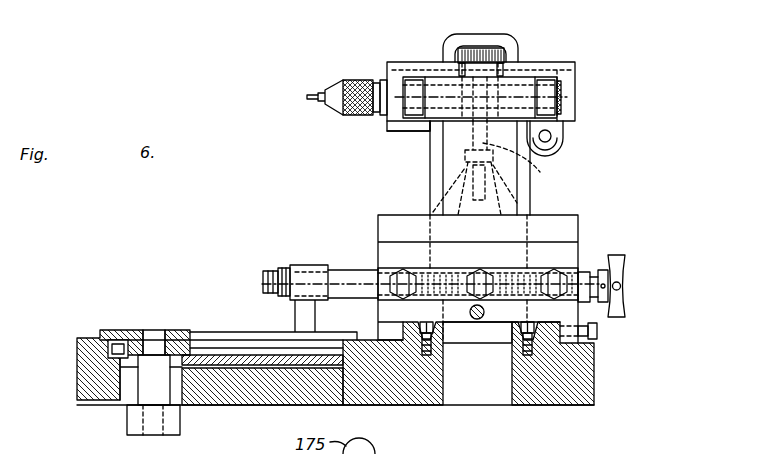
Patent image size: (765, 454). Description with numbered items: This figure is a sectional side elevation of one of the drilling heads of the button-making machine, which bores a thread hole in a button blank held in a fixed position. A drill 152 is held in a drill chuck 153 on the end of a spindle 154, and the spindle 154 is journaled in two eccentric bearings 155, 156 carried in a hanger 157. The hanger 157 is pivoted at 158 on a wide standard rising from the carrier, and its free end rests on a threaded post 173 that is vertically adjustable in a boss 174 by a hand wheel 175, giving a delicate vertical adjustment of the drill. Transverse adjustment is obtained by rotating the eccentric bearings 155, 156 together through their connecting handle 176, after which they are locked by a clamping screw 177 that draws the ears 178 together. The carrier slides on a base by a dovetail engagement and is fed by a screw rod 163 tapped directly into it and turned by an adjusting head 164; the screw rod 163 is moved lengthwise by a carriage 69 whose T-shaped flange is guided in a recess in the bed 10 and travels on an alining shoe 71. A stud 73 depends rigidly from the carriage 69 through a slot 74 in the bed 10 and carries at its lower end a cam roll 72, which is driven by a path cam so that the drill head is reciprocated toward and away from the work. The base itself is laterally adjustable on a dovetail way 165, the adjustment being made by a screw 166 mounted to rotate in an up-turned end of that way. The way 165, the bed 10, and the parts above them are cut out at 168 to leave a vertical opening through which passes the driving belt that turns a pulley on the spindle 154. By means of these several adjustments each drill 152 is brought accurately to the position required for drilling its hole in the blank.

The bed 10 is at (582, 376).
The carriage 69 is at (300, 318).
The alining shoe 71 is at (250, 368).
The cam roll 72 is at (130, 419).
The stud 73 is at (156, 366).
The slot 74 is at (128, 382).
The drill 152 is at (313, 95).
The drill chuck 153 is at (360, 117).
The spindle 154 is at (435, 88).
The eccentric bearing 155 is at (403, 132).
The eccentric bearing 156 is at (572, 133).
The hanger 157 is at (533, 62).
The pivot 158 is at (413, 80).
The screw rod 163 is at (352, 280).
The adjusting head 164 is at (618, 267).
The dovetail way 165 is at (540, 338).
The screw 166 is at (477, 320).
The cut-out opening 168 is at (498, 337).
The threaded post 173 is at (528, 168).
The boss 174 is at (463, 172).
The hand wheel 175 is at (481, 57).
The connecting handle 176 is at (510, 50).
The clamping screw 177 is at (553, 143).
The ears 178 is at (556, 146).